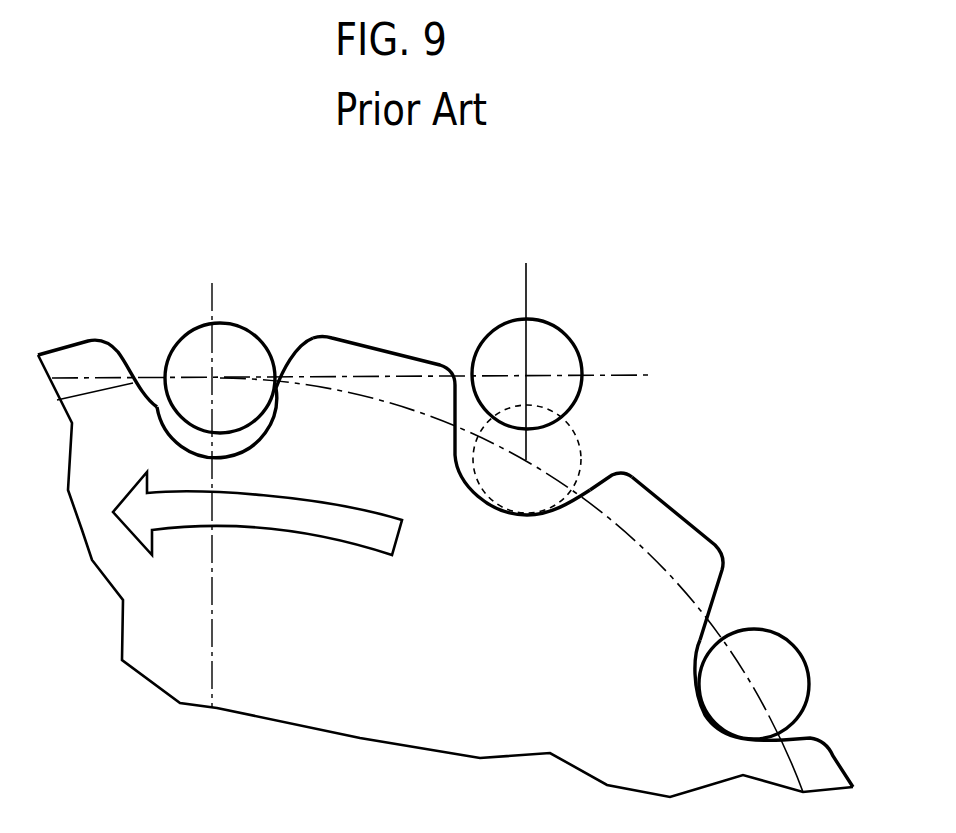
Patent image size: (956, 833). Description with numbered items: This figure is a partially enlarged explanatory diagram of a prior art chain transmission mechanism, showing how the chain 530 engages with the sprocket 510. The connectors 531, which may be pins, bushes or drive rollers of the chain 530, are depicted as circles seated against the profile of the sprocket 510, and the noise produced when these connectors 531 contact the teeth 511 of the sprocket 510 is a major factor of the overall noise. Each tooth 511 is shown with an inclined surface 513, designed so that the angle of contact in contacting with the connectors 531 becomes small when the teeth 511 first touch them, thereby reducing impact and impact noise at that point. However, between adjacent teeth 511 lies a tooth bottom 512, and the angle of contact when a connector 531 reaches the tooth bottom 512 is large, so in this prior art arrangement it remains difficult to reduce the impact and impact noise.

The sprocket 510 is at (547, 743).
The tooth 511 is at (375, 362).
The tooth bottom 512 is at (220, 435).
The inclined surface 513 is at (287, 377).
The chain 530 is at (627, 372).
The connectors 531 is at (190, 340).